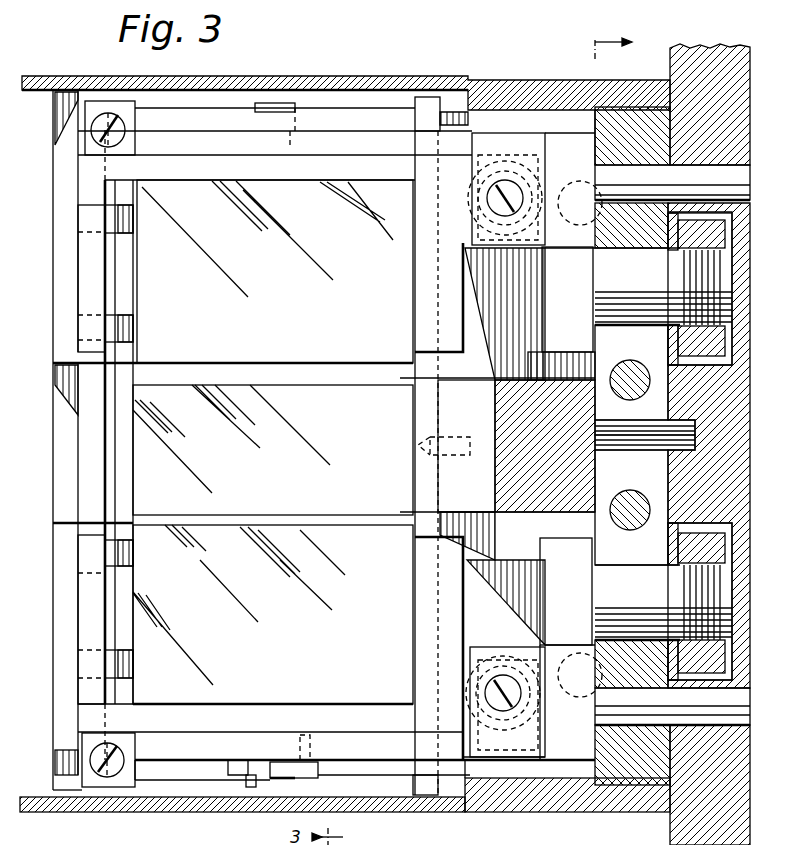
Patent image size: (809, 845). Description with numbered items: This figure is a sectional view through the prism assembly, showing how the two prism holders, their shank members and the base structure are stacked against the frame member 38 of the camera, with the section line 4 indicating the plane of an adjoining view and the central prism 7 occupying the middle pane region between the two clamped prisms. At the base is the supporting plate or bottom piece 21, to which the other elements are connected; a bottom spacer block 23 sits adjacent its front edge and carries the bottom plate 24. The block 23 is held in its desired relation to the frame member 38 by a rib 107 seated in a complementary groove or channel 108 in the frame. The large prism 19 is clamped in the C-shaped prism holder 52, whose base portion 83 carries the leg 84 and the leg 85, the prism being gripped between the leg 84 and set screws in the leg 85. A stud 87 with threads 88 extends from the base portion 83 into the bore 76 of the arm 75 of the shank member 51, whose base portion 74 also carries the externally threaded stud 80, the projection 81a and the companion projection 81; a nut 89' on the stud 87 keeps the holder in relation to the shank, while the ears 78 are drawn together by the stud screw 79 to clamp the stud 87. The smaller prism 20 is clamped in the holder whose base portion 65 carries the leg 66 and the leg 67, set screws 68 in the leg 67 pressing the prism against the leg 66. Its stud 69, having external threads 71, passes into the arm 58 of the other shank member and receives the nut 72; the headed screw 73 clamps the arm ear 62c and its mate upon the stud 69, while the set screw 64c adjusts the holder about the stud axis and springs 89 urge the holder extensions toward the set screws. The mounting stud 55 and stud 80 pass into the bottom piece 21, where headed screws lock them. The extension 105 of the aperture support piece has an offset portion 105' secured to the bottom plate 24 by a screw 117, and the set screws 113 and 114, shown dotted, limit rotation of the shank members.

The frame member 38 is at (733, 378).
The bottom spacer block 23 is at (630, 130).
The section line 4 is at (621, 47).
The mounting stud 55 is at (605, 278).
The offset portion of extension 105' is at (420, 447).
The rib 107 is at (668, 416).
The groove or channel 108 is at (668, 470).
The externally threaded stud 80 is at (608, 576).
The supporting plate or bottom piece 21 is at (620, 775).
The ears 78 is at (127, 785).
The clip housing 62c is at (136, 104).
The headed screw 73 is at (124, 138).
The arm 58 is at (208, 130).
The nut 72 is at (298, 119).
The external threads 71 is at (295, 141).
The base portion 65 is at (210, 168).
The bottom plate 24 is at (415, 460).
The prism 20 is at (290, 305).
The glass pane 7 is at (282, 461).
The prism 19 is at (344, 634).
The set screws 68 is at (128, 233).
The leg 67 is at (80, 335).
The leg 85 is at (98, 592).
The prism holder 52 is at (228, 702).
The base portion 83 is at (290, 712).
The stud screw 79 is at (125, 752).
The shank member 51 is at (190, 755).
The nut 89' is at (218, 778).
The stud 87 is at (252, 788).
The threads 88 is at (298, 786).
The bore 76 is at (308, 722).
The arm 75 is at (378, 758).
The leg 66 is at (453, 297).
The extension 105 is at (520, 446).
The screw 117 is at (418, 445).
The stud 69 is at (531, 179).
The set screw 64c is at (492, 203).
The set screw 114 is at (577, 181).
The leg 84 is at (425, 583).
The bracket flange 81 is at (478, 655).
The base portion 74 is at (545, 556).
The set screw 113 is at (578, 653).
The springs 89 is at (520, 702).
The projection 81a is at (495, 745).